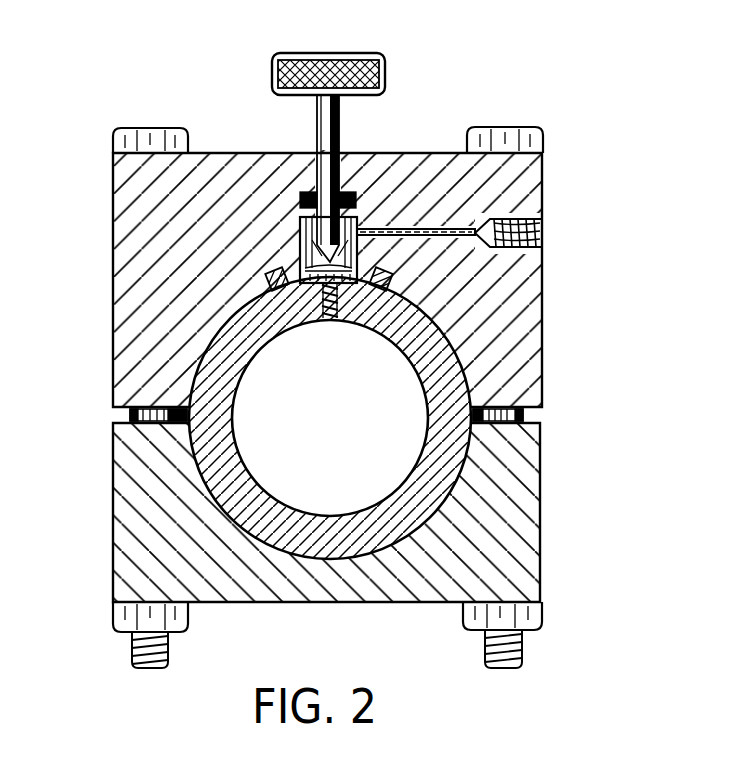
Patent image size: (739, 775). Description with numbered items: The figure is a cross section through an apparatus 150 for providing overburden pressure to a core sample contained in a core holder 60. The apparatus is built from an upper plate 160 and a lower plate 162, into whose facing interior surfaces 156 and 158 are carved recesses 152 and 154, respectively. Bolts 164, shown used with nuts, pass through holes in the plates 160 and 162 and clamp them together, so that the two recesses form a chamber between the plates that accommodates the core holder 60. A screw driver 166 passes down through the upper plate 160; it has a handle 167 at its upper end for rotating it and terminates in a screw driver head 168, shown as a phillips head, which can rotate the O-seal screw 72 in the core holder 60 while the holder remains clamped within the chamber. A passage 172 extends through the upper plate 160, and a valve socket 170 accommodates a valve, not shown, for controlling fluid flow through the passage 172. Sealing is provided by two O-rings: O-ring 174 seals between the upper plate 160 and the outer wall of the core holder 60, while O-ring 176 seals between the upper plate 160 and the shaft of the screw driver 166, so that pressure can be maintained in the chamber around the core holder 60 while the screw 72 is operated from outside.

The apparatus 150 is at (342, 343).
The recess 152 is at (462, 348).
The recess 154 is at (213, 503).
The interior surface 156 is at (523, 412).
The interior surface 158 is at (533, 424).
The upper plate 160 is at (543, 276).
The lower plate 162 is at (518, 570).
The bolts 164 is at (133, 128).
The screw driver 166 is at (317, 116).
The handle 167 is at (333, 53).
The screw driver head 168 is at (356, 200).
The valve socket 170 is at (543, 233).
The passage 172 is at (483, 212).
The O-ring 174 is at (270, 284).
The O-ring 176 is at (298, 203).
The O-seal screw 72 is at (330, 320).
The core holder 60 is at (468, 366).